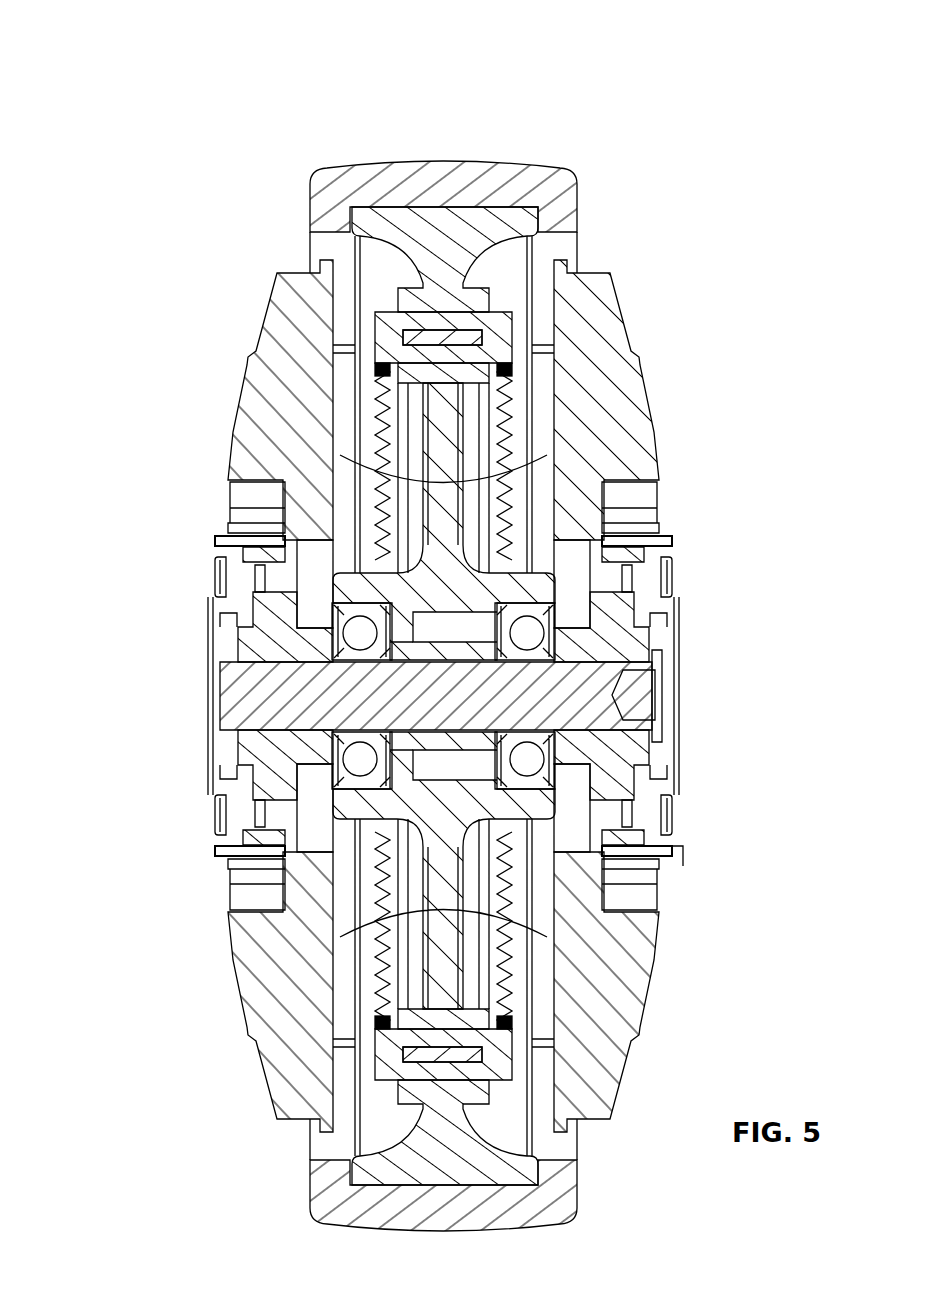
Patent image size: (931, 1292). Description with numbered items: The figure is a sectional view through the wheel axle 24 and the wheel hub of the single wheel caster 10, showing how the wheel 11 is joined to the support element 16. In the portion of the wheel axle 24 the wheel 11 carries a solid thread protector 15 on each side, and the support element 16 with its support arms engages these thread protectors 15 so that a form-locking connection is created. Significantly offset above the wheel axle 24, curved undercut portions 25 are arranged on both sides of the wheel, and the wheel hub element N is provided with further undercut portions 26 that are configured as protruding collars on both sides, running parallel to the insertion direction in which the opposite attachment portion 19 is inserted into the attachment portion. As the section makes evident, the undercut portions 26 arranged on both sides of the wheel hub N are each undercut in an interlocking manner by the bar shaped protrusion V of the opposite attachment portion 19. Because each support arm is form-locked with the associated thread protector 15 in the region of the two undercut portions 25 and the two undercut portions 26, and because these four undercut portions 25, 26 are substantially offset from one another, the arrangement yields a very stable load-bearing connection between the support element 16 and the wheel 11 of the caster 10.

The single wheel caster 10 is at (462, 616).
The wheel 11 is at (630, 277).
The thread protector 15 is at (260, 415).
The support element 16 is at (213, 670).
The opposite attachment portion 19 is at (705, 712).
The wheel axle 24 is at (575, 690).
The curved undercut portion 25 is at (212, 535).
The undercut portion 26 is at (217, 632).
The bar shaped protrusion V is at (245, 618).
The wheel hub element N is at (683, 860).